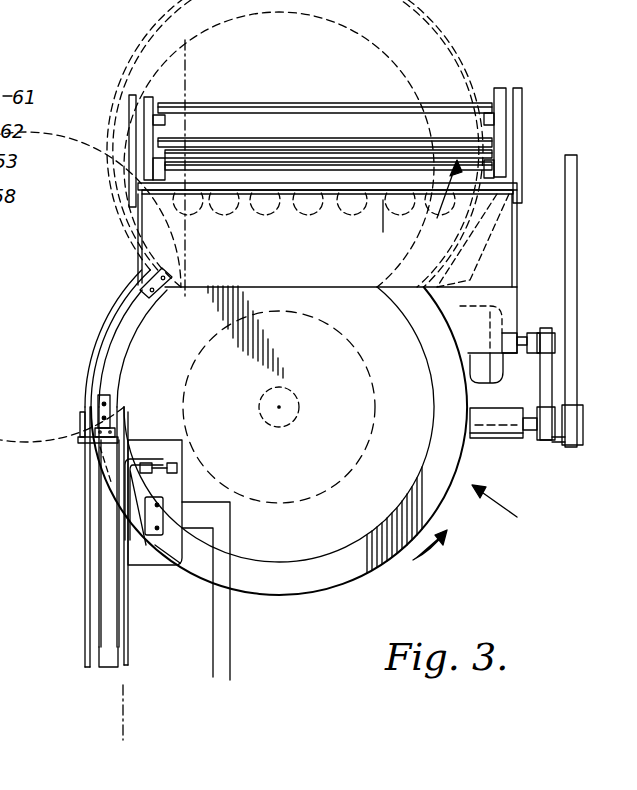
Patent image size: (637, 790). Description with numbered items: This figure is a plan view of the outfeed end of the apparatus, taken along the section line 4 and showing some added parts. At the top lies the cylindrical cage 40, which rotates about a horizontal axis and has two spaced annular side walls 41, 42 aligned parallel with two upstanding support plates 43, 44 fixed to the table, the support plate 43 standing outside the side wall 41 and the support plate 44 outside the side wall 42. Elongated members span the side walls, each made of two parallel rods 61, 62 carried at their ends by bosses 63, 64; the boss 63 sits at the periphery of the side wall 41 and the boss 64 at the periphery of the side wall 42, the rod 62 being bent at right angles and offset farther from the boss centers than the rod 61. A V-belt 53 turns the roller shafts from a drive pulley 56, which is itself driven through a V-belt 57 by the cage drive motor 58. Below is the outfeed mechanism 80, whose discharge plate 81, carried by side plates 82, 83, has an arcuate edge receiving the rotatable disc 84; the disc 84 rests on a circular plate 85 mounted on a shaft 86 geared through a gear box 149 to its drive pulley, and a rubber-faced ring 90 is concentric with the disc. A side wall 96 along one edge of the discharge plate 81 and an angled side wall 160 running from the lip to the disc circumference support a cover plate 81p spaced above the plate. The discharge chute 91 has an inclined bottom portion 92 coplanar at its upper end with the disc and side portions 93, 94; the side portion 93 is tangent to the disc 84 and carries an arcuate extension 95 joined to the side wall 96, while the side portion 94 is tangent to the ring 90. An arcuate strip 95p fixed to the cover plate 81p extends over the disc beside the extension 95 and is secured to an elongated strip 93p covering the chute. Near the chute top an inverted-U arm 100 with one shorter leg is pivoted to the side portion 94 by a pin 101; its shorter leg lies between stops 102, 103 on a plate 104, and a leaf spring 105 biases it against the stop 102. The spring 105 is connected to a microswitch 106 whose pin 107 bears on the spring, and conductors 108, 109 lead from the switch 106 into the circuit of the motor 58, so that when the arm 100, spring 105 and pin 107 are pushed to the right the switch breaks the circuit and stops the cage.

The section line 4- 4 is at (118, 48).
The cylindrical cage 40 is at (317, 200).
The annular side wall 41 is at (150, 97).
The annular side wall 42 is at (498, 88).
The support plate 43 is at (132, 95).
The support plate 44 is at (517, 88).
The V-belt 53 is at (570, 155).
The drive pulley 56 is at (556, 441).
The V-belt 57 is at (553, 373).
The motor 58 is at (470, 372).
The rod 61 is at (212, 147).
The rod 62 is at (313, 138).
The boss 63 is at (160, 120).
The boss 64 is at (495, 120).
The outfeed mechanism 80 is at (498, 520).
The discharge plate 81 is at (505, 293).
The cover plate 81p is at (385, 200).
The side plate 82 is at (138, 231).
The side plate 83 is at (533, 237).
The rotatable disc 84 is at (362, 572).
The circular plate 85 is at (370, 358).
The rotatable shaft 86 is at (292, 393).
The ring 90 is at (443, 455).
The discharge chute 91 is at (70, 612).
The inclined bottom portion 92 is at (92, 583).
The side portion 93 is at (88, 638).
The elongated strip 93p is at (105, 665).
The side portion 94 is at (130, 612).
The arcuate extension 95 is at (88, 345).
The arcuate strip 95p is at (130, 318).
The side wall 96 is at (138, 258).
The arm 100 is at (147, 440).
The pin 101 is at (127, 513).
The stop 102 is at (130, 487).
The stop 103 is at (178, 465).
The plate 104 is at (172, 440).
The leaf spring 105 is at (160, 496).
The microswitch 106 is at (152, 543).
The pin 107 is at (130, 512).
The conductor 108 is at (213, 677).
The conductor 109 is at (232, 675).
The gear box 149 is at (513, 437).
The side wall 160 is at (458, 242).